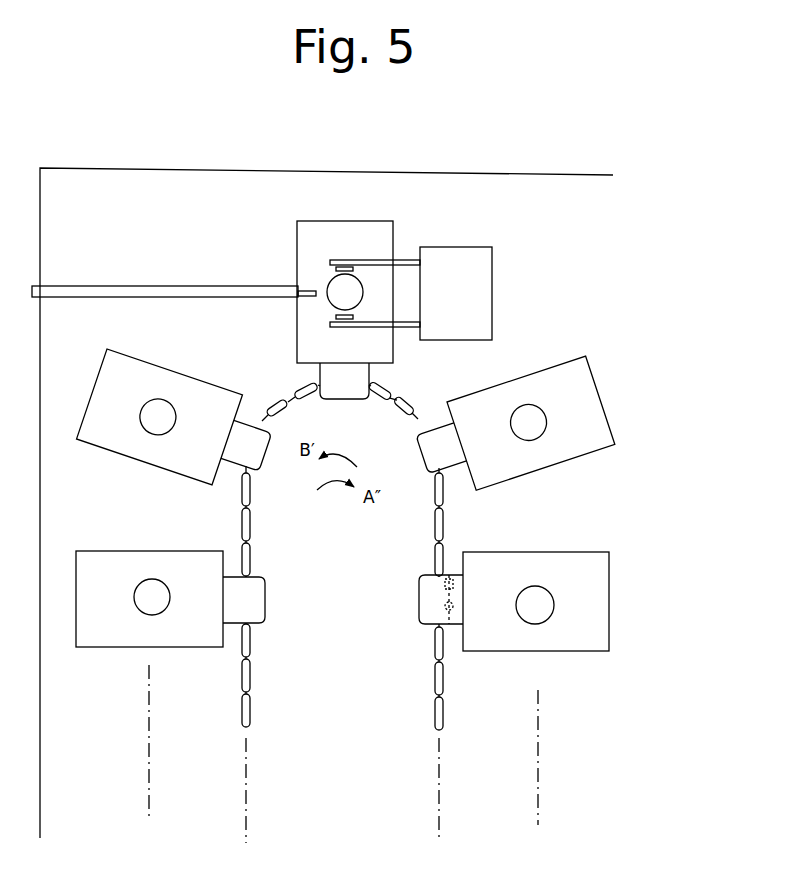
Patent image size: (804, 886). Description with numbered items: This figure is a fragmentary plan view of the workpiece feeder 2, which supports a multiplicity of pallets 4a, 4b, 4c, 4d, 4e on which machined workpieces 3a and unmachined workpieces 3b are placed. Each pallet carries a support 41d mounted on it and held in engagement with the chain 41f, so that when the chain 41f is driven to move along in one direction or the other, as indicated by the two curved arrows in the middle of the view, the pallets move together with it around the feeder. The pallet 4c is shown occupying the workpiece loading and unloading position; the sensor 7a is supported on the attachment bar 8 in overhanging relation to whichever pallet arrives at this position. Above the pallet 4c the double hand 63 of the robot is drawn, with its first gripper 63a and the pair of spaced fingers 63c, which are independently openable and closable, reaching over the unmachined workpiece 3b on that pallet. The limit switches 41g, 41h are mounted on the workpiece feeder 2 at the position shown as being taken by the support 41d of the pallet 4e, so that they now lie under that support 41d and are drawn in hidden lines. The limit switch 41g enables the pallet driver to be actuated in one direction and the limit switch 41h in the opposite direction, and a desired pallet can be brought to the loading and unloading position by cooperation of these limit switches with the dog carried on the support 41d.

The workpiece feeder 2 is at (173, 181).
The attachment bar 8 is at (135, 287).
The machined workpiece 3a is at (145, 423).
The unmachined workpiece 3b is at (333, 290).
The pallet 4a is at (120, 550).
The pallet 4b is at (156, 362).
The pallet 4c is at (366, 237).
The pallet 4d is at (548, 359).
The pallet 4e is at (578, 551).
The sensor 7a is at (314, 300).
The double hand 63 is at (460, 233).
The first gripper 63a is at (483, 294).
The fingers 63c is at (395, 260).
The support 41d is at (347, 392).
The chain 41f is at (250, 702).
The limit switch 41g is at (451, 575).
The limit switch 41h is at (450, 617).